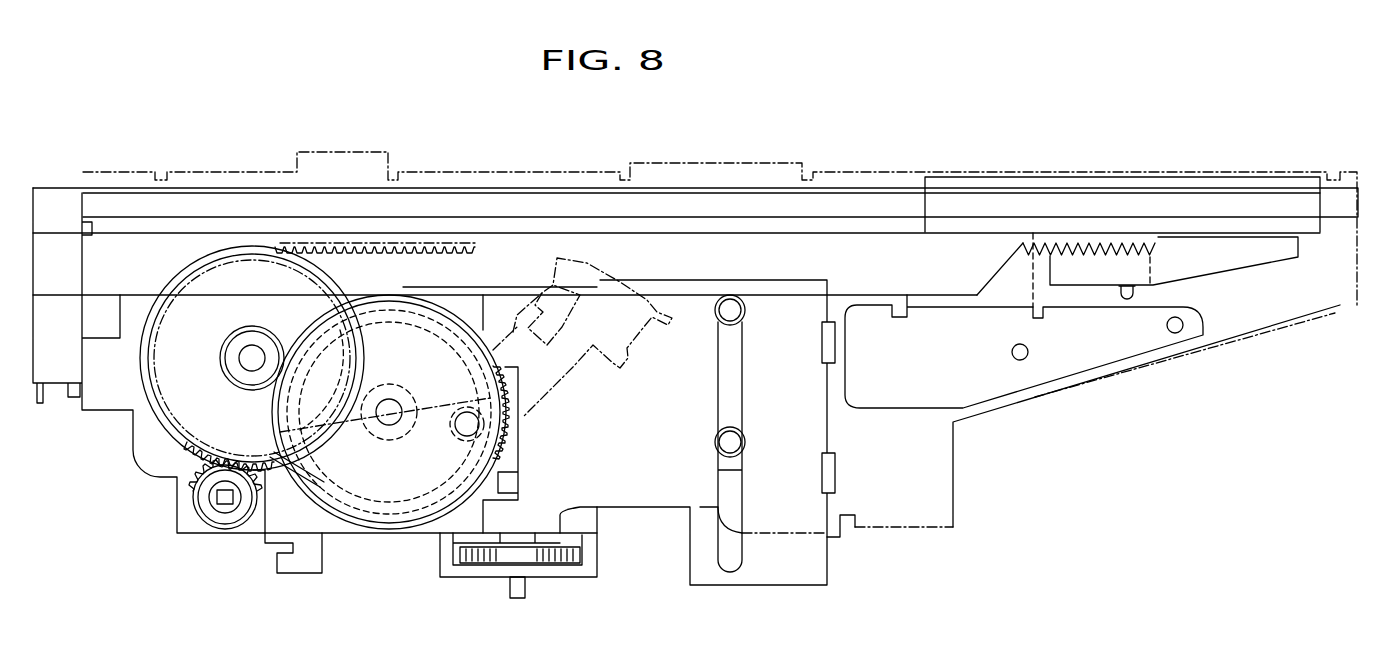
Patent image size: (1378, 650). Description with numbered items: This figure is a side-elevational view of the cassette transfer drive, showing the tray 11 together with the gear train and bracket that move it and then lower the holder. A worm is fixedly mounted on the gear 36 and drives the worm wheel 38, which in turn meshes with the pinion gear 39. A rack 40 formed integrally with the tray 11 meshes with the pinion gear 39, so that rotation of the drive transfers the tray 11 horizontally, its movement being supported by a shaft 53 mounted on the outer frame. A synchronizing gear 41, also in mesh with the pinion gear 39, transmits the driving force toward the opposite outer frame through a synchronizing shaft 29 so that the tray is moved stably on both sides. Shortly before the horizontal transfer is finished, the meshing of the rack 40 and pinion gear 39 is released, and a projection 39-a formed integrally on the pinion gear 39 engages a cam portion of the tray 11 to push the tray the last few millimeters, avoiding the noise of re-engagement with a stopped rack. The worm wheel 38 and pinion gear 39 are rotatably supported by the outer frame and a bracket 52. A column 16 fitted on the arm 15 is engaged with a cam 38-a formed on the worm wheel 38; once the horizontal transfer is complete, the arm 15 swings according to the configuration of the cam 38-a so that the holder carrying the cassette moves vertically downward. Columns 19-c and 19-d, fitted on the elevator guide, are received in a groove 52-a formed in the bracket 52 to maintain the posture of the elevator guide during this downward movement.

The tray 11 is at (62, 198).
The arm 15 is at (545, 388).
The column 16 is at (417, 517).
The column 19-c is at (733, 310).
The column 19-d is at (733, 440).
The synchronizing shaft 29 is at (215, 503).
The gear 36 is at (582, 557).
The worm wheel 38 is at (362, 533).
The cam 38-a is at (388, 533).
The pinion gear 39 is at (160, 423).
The projection 39-a is at (230, 263).
The rack 40 is at (397, 247).
The synchronizing gear 41 is at (237, 540).
The bracket 52 is at (306, 574).
The groove 52-a is at (742, 557).
The shaft 53 is at (1168, 188).